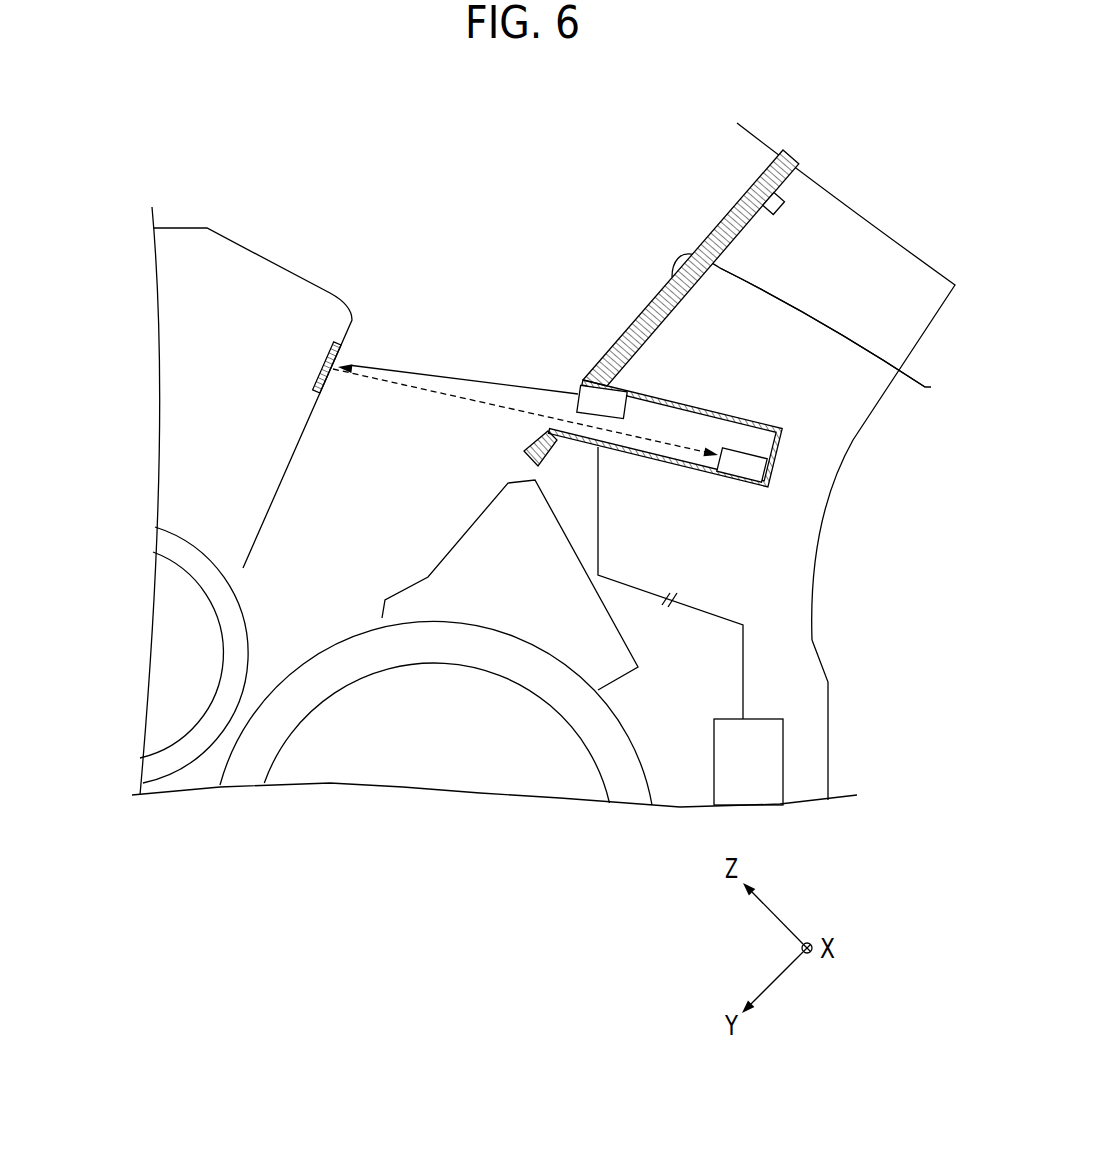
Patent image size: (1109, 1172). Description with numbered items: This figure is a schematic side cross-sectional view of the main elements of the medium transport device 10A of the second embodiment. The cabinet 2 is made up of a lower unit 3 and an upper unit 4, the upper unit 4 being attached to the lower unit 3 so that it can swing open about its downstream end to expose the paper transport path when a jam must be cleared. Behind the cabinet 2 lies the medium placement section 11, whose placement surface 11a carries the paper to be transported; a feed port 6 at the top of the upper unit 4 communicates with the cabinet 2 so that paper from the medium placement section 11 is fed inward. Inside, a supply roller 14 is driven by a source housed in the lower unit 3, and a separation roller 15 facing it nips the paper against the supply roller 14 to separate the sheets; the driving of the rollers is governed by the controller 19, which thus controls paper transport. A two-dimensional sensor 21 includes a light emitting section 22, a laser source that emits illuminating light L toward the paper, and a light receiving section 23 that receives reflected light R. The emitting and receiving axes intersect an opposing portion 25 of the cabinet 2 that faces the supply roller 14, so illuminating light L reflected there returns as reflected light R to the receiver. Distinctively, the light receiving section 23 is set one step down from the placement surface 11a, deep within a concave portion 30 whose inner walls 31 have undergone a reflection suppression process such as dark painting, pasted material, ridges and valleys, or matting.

The cabinet 2 is at (533, 465).
The lower unit 3 is at (828, 708).
The upper unit 4 is at (217, 228).
The feed port 6 is at (577, 371).
The medium transport device 10A is at (779, 381).
The medium placement section 11 is at (779, 309).
The placement surface 11a is at (847, 334).
The supply roller 14 is at (393, 740).
The separation roller 15 is at (150, 673).
The controller 19 is at (783, 750).
The two-dimensional sensor 21 is at (672, 398).
The light emitting section 22 is at (643, 392).
The light receiving section 23 is at (747, 424).
The opposing portion 25 is at (325, 370).
The concave portion 30 is at (683, 435).
The inner walls 31 is at (770, 428).
The illuminating light L is at (560, 393).
The reflected light R is at (517, 413).